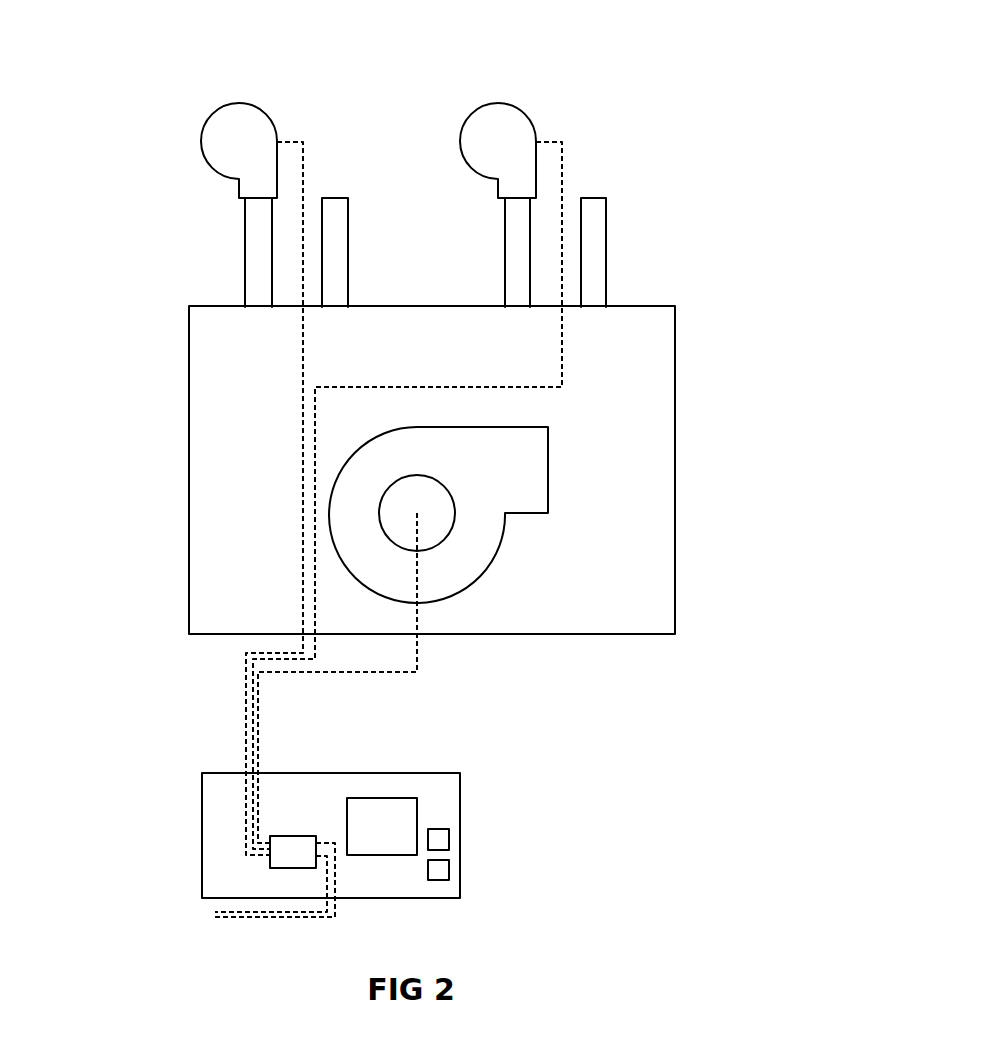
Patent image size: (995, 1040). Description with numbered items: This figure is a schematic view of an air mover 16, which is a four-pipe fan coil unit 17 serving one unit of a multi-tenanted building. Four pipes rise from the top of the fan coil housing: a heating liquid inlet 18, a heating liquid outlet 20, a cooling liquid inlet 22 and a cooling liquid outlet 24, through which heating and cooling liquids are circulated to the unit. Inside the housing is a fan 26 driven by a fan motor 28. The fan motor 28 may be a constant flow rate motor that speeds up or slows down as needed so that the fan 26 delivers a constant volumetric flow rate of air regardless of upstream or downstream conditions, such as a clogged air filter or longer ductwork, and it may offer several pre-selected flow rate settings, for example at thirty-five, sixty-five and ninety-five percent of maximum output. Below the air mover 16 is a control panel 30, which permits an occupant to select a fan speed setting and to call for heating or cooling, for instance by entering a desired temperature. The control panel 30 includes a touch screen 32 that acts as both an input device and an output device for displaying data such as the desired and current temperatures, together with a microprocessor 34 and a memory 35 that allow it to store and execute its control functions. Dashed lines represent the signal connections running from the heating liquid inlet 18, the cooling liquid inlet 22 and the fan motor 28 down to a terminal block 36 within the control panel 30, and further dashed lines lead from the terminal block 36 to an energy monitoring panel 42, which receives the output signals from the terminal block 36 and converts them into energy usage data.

The air mover 16 is at (350, 427).
The four-pipe fan coil unit 17 is at (169, 286).
The heating liquid inlet 18 is at (245, 242).
The heating liquid outlet 20 is at (347, 248).
The cooling liquid inlet 22 is at (505, 242).
The cooling liquid outlet 24 is at (607, 237).
The fan 26 is at (550, 450).
The fan motor 28 is at (435, 545).
The control panel 30 is at (408, 898).
The touch screen 32 is at (390, 855).
The microprocessor 34 is at (449, 839).
The memory 35 is at (449, 870).
The terminal block 36 is at (280, 868).
The energy monitoring panel 42 is at (213, 886).